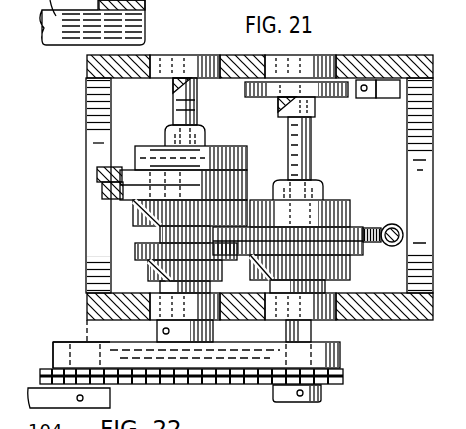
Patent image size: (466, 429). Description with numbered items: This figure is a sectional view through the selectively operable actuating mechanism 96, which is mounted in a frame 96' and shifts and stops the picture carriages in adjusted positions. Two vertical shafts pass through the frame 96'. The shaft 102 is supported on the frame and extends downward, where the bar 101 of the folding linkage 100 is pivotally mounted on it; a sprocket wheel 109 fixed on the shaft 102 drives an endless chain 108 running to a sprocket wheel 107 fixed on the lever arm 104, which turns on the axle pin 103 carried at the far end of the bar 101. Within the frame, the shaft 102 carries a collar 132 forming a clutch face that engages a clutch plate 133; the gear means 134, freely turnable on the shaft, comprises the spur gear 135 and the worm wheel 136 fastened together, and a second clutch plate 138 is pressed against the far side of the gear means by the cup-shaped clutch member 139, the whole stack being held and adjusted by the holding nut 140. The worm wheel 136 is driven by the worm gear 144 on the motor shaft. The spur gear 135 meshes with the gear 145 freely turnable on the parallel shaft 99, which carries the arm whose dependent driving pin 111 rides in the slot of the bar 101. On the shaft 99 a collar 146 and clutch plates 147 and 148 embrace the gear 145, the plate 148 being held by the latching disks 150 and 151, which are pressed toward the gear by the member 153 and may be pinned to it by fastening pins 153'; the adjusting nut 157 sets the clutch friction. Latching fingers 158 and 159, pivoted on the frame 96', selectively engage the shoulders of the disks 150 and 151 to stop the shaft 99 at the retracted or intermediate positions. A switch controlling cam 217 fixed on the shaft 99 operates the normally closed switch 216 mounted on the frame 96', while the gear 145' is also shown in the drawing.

The actuating mechanism 96 is at (456, 62).
The frame 96' is at (259, 170).
The shaft 99 is at (180, 92).
The linkage 100 is at (342, 357).
The bar 101 is at (160, 331).
The shaft 102 is at (312, 333).
The axle pin 103 is at (82, 347).
The lever arm 104 is at (69, 398).
The sprocket wheel 107 is at (44, 375).
The endless chain 108 is at (145, 385).
The sprocket wheel 109 is at (322, 395).
The driving pin 111 is at (150, 354).
The collar 132 is at (351, 275).
The clutch plate 133 is at (351, 258).
The gear means 134 is at (377, 224).
The spur gear 135 is at (367, 225).
The worm wheel 136 is at (374, 226).
The clutch plate 138 is at (324, 212).
The clutch member 139 is at (331, 199).
The holding nut 140 is at (306, 182).
The worm gear 144 is at (404, 236).
The gear 145 is at (143, 256).
The gear 145' is at (130, 237).
The collar 146 is at (162, 273).
The clutch plate 147 is at (148, 266).
The clutch plate 148 is at (132, 207).
The latching disk 150 is at (246, 192).
The latching disk 151 is at (247, 178).
The member 153 is at (193, 142).
The fastening pins 153' is at (209, 148).
The adjusting nut 157 is at (211, 143).
The latching finger 158 is at (101, 190).
The latching finger 159 is at (98, 173).
The normally closed switch 216 is at (381, 98).
The switch controlling cam 217 is at (333, 97).